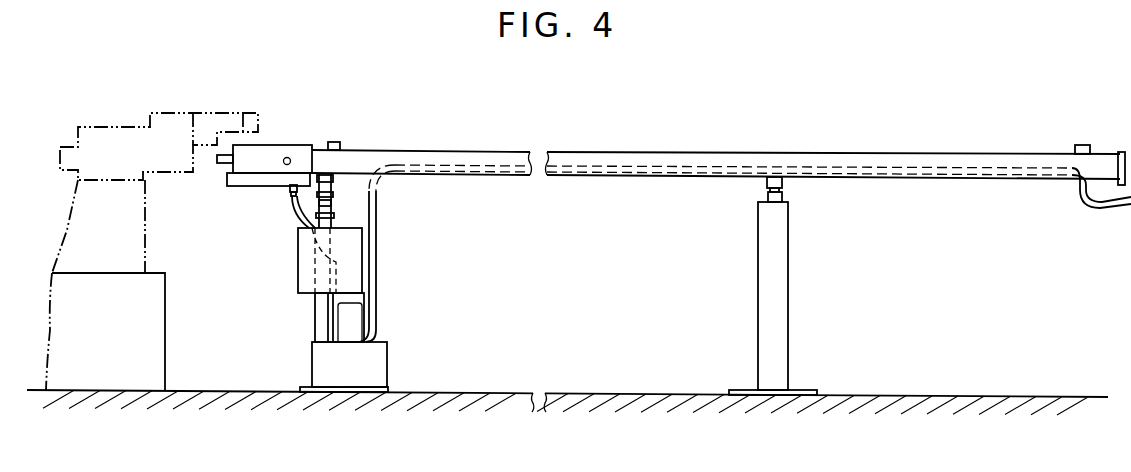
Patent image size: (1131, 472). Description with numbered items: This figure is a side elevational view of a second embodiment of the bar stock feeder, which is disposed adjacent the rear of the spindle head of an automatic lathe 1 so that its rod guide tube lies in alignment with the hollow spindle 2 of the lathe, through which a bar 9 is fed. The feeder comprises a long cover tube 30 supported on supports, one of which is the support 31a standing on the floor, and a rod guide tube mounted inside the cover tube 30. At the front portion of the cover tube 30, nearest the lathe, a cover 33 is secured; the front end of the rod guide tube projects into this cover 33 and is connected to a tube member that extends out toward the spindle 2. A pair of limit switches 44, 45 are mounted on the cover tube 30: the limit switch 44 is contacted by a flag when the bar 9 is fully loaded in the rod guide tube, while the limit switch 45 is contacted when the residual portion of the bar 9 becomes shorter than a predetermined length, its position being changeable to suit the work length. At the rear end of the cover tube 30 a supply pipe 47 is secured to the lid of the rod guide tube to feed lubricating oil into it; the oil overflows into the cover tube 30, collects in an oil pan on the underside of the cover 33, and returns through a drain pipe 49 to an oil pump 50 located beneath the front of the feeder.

The automatic lathe 1 is at (165, 323).
The hollow spindle 2 is at (60, 158).
The bar 9 is at (219, 166).
The cover tube 30 is at (618, 152).
The support 31a is at (780, 315).
The cover 33 is at (272, 152).
The limit switch 44 is at (1084, 145).
The limit switch 45 is at (338, 142).
The supply pipe 47 is at (1096, 212).
The drain pipe 49 is at (285, 212).
The oil pump 50 is at (388, 356).